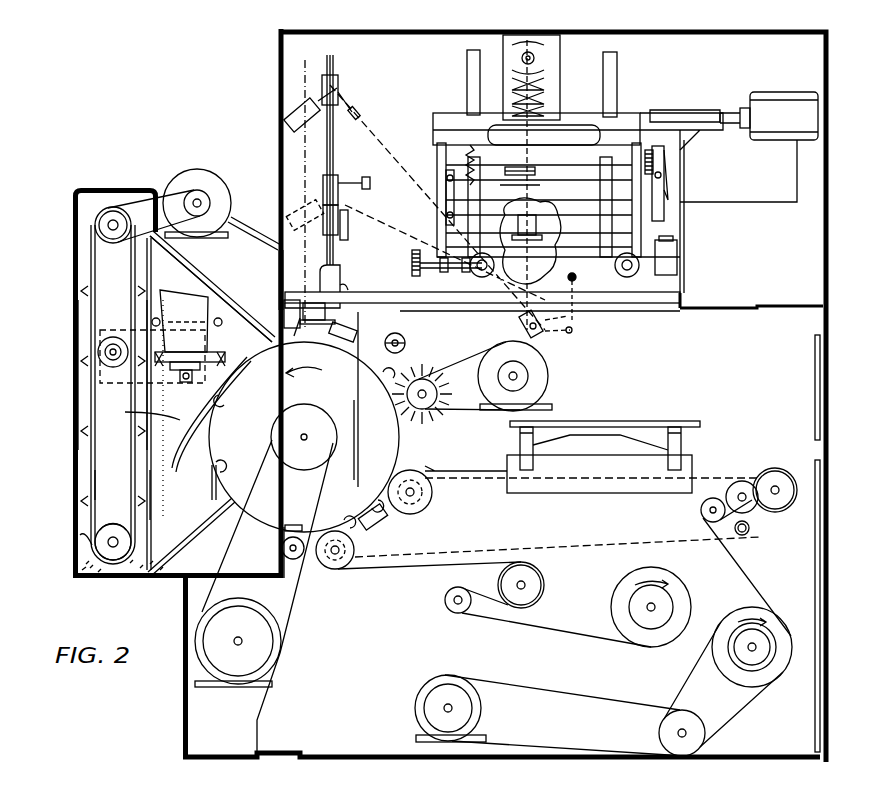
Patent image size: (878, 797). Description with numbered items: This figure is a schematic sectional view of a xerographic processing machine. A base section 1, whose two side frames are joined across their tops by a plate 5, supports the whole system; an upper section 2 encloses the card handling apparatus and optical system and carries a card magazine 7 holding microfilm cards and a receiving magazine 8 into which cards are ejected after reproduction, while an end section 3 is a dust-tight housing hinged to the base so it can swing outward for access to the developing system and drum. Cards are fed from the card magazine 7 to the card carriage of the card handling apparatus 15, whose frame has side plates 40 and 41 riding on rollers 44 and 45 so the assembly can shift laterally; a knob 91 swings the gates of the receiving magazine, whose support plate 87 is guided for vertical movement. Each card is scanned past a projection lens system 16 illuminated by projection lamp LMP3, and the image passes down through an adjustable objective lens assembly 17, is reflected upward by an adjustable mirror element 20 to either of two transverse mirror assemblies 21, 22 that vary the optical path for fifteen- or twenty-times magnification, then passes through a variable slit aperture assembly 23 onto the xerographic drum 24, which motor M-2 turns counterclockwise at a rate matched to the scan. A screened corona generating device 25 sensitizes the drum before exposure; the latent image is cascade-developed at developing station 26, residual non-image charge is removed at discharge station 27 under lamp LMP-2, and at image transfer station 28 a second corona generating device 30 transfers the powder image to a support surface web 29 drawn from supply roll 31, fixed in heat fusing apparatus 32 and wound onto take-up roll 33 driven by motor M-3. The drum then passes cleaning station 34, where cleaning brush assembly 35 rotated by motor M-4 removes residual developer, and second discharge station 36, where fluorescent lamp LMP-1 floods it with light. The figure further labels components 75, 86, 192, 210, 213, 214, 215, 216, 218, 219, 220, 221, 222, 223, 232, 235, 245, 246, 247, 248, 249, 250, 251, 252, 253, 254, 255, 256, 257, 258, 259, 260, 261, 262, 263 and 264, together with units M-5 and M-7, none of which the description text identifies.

The base section 1 is at (836, 455).
The upper section 2 is at (836, 133).
The end section 3 is at (60, 426).
The plate 5 is at (658, 306).
The card magazine 7 is at (624, 76).
The receiving magazine 8 is at (604, 275).
The card handling apparatus 15 is at (644, 120).
The projection lens system 16 is at (505, 60).
The adjustable objective lens assembly 17 is at (536, 245).
The adjustable mirror element 20 is at (528, 328).
The transverse mirror assembly 21 is at (347, 228).
The transverse mirror assembly 22 is at (309, 107).
The variable slit aperture assembly 23 is at (350, 326).
The xerographic drum 24 is at (399, 437).
The screened corona generating device 25 is at (355, 336).
The developing station 26 is at (226, 400).
The discharge station 27 is at (293, 525).
The image transfer station 28 is at (364, 516).
The support surface web 29 is at (392, 572).
The second corona generating device 30 is at (386, 526).
The supply roll 31 is at (676, 603).
The heat fusing apparatus 32 is at (510, 452).
The take-up roll 33 is at (776, 665).
The cleaning station 34 is at (367, 399).
The cleaning brush assembly 35 is at (429, 381).
The second discharge station 36 is at (321, 373).
The side plate 40 is at (635, 261).
The side plate 41 is at (442, 204).
The roller 44 is at (646, 281).
The roller 45 is at (480, 277).
The lamp housing 75 is at (490, 134).
The bar 86 is at (512, 175).
The support plate 87 is at (540, 187).
The knob 91 is at (655, 168).
The rack 192 is at (660, 181).
The lamp block 210 is at (550, 44).
The link 213 is at (565, 320).
The link 214 is at (542, 334).
The pin 215 is at (567, 338).
The pin 216 is at (578, 280).
The rod 218 is at (333, 57).
The arm 219 is at (350, 176).
The block 220 is at (333, 267).
The bracket 221 is at (340, 291).
The bracket 222 is at (305, 330).
The block 223 is at (284, 306).
The gear 232 is at (412, 276).
The box 235 is at (677, 265).
The wall 245 is at (76, 298).
The channel 246 is at (93, 378).
The belt run 247 is at (93, 474).
The pulley hub 248 is at (98, 234).
The scraper 249 is at (92, 544).
The pulley 250 is at (108, 224).
The pulley 251 is at (114, 532).
The belt 252 is at (141, 198).
The slanted wall 253 is at (178, 248).
The wall 254 is at (278, 284).
The chute 255 is at (222, 290).
The guide 256 is at (139, 413).
The bottom wall 257 is at (206, 526).
The toner 258 is at (78, 562).
The wall 259 is at (152, 487).
The container 260 is at (203, 329).
The pins 261 is at (216, 326).
The conveyor belt 262 is at (95, 260).
The pulley 263 is at (113, 335).
The housing 264 is at (110, 370).
The fluorescent lamp LMP-1 is at (406, 344).
The lamp LMP-2 is at (283, 553).
The projection lamp LMP3 is at (583, 63).
The motor M-2 is at (258, 620).
The motor M-3 is at (446, 710).
The motor M-4 is at (540, 388).
The motor M-5 is at (211, 199).
The motor M-7 is at (778, 141).